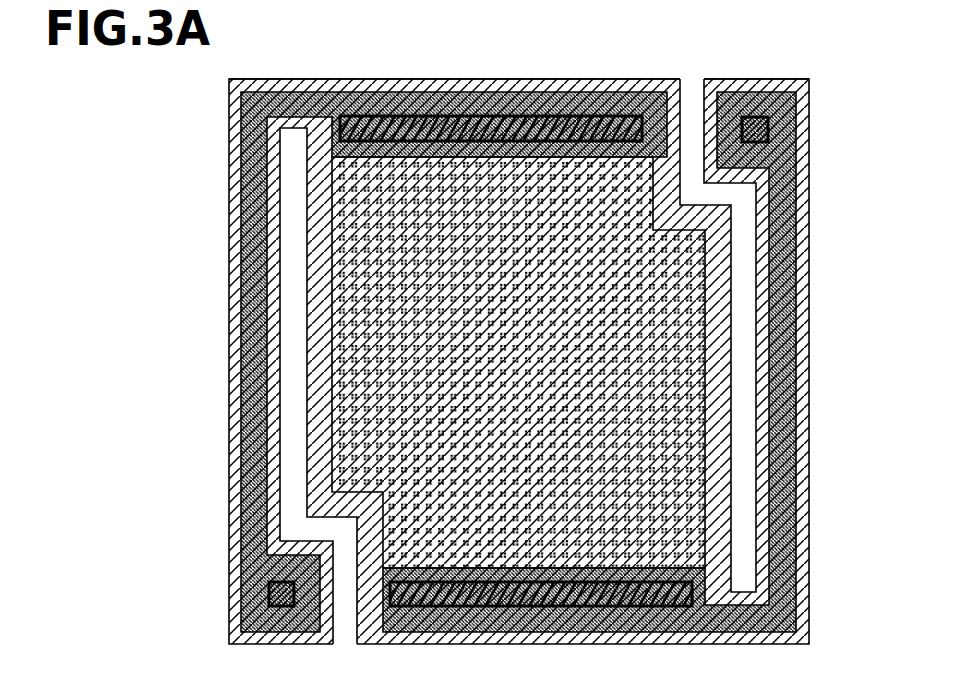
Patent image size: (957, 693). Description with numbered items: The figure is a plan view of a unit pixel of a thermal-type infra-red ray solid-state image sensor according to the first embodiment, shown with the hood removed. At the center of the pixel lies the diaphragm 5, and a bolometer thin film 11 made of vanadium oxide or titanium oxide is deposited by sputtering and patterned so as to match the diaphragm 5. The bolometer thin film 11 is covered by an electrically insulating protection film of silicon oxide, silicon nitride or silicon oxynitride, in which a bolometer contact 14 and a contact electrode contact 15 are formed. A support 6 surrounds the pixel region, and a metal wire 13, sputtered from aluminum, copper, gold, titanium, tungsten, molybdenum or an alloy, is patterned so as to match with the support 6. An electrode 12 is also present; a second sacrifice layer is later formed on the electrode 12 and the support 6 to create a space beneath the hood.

The diaphragm 5 is at (305, 413).
The support 6 is at (809, 318).
The bolometer thin film 11 is at (352, 307).
The electrode 12 is at (389, 82).
The metal wire 13 is at (788, 392).
The bolometer contact 14 is at (563, 92).
The contact electrode contact 15 is at (757, 110).